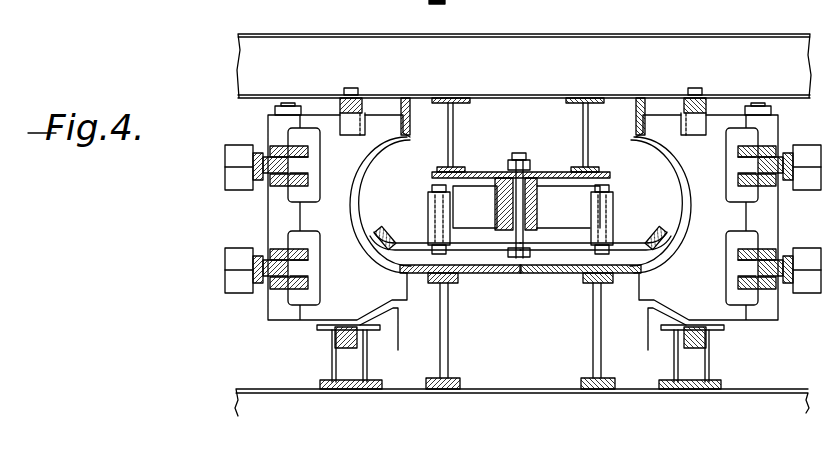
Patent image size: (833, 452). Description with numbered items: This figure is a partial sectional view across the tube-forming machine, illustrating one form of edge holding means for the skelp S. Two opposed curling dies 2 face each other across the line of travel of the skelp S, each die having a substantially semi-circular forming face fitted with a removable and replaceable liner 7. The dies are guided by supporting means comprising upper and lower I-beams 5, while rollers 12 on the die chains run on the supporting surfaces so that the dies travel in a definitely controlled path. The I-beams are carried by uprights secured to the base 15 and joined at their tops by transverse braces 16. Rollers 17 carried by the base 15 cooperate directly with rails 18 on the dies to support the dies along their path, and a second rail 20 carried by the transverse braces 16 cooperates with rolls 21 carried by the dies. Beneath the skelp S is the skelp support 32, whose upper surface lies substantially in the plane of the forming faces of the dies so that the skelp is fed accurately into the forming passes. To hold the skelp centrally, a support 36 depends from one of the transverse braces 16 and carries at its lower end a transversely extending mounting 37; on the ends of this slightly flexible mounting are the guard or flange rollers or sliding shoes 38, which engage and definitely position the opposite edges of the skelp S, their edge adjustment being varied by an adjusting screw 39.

The curling die 2 is at (373, 133).
The I-beam 5 is at (243, 172).
The liner 7 is at (378, 174).
The roller 12 is at (300, 238).
The base 15 is at (270, 378).
The transverse brace 16 is at (250, 62).
The roller 17 is at (345, 353).
The rail 18 is at (345, 322).
The second rail 20 is at (340, 101).
The roll 21 is at (353, 126).
The skelp support 32 is at (517, 278).
The support 36 is at (468, 200).
The mounting 37 is at (565, 247).
The guard or flange rollers or sliding shoes 38 is at (380, 230).
The adjusting screw 39 is at (521, 160).
The skelp S is at (490, 266).